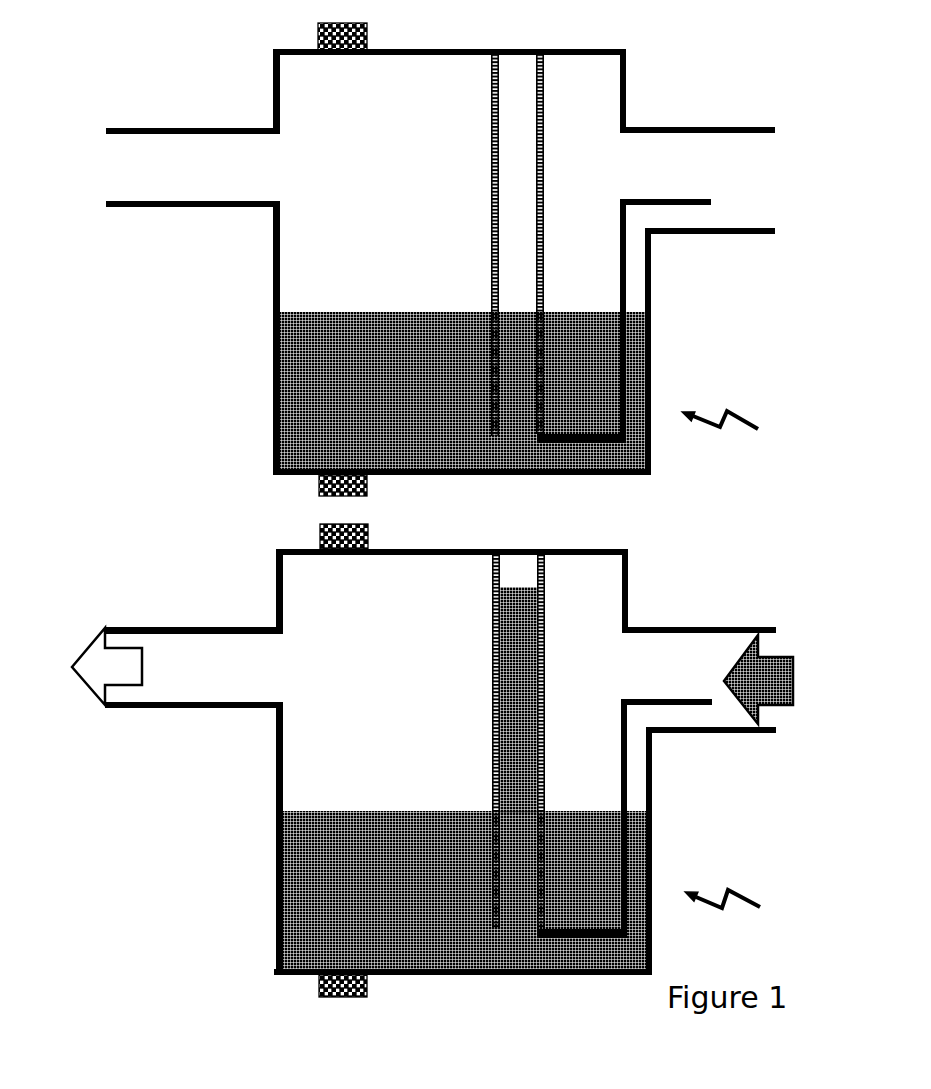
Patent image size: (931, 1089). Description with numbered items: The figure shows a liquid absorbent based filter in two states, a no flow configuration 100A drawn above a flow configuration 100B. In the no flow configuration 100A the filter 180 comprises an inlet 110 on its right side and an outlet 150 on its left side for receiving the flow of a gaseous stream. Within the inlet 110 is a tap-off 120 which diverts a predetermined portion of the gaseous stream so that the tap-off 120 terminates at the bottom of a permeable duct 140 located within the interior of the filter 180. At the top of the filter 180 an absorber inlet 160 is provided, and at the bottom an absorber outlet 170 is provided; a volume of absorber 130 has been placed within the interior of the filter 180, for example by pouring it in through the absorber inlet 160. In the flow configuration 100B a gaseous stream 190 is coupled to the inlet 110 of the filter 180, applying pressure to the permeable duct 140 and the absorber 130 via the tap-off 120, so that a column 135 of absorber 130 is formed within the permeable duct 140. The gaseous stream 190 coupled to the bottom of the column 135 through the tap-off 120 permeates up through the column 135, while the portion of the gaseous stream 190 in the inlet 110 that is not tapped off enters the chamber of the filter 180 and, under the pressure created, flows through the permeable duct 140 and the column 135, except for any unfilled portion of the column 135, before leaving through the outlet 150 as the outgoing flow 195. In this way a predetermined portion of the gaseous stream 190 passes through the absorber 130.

The no flow configuration 100A is at (748, 440).
The flow configuration 100B is at (749, 916).
The inlet 110 is at (723, 152).
The tap-off 120 is at (685, 213).
The absorber 130 is at (343, 390).
The column 135 is at (515, 648).
The permeable duct 140 is at (492, 252).
The outlet 150 is at (196, 187).
The absorber inlet 160 is at (313, 33).
The absorber outlet 170 is at (319, 487).
The filter 180 is at (626, 79).
The gaseous stream 190 is at (793, 708).
The outgoing gas flow 195 is at (82, 698).